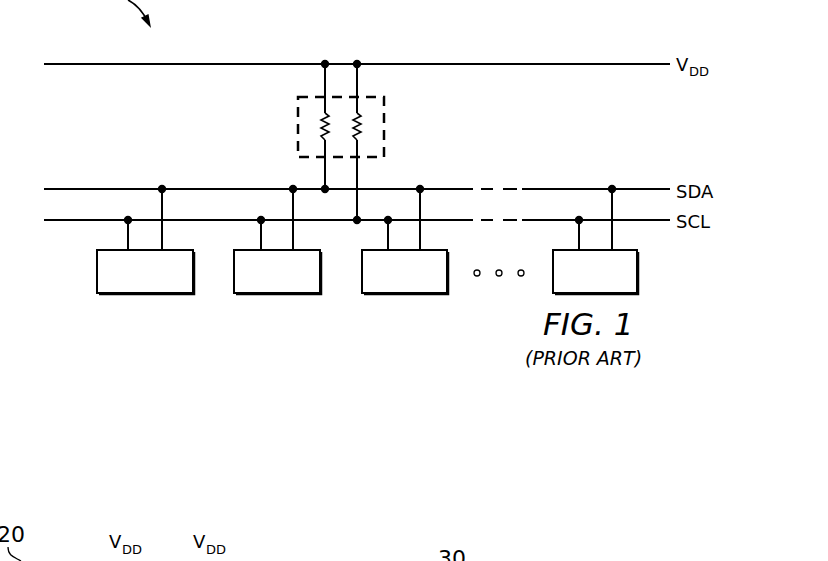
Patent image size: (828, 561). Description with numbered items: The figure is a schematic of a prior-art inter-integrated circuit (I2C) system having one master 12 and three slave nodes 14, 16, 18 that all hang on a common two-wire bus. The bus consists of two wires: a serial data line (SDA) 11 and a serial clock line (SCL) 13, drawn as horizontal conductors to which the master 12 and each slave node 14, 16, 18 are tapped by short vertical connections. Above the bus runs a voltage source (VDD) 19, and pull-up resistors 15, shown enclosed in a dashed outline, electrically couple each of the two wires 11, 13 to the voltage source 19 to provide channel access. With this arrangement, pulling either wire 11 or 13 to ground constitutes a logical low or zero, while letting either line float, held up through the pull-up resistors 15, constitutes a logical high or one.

The serial data line 11 is at (98, 187).
The master 12 is at (145, 295).
The serial clock line 13 is at (72, 222).
The slave node 14 is at (276, 295).
The pull-up resistors 15 is at (389, 118).
The slave node 16 is at (403, 295).
The slave node 18 is at (638, 273).
The voltage source 19 is at (531, 63).